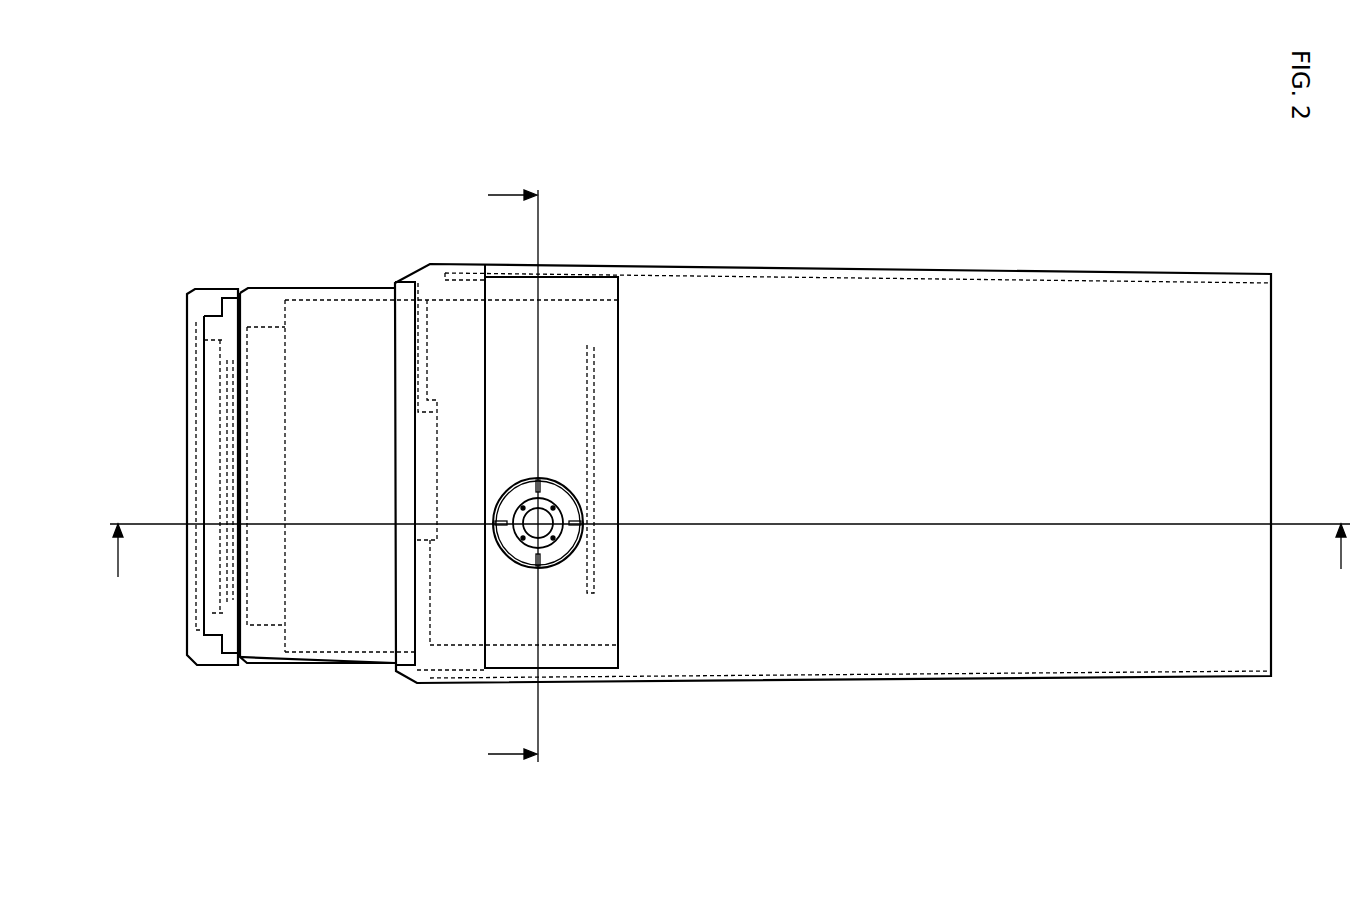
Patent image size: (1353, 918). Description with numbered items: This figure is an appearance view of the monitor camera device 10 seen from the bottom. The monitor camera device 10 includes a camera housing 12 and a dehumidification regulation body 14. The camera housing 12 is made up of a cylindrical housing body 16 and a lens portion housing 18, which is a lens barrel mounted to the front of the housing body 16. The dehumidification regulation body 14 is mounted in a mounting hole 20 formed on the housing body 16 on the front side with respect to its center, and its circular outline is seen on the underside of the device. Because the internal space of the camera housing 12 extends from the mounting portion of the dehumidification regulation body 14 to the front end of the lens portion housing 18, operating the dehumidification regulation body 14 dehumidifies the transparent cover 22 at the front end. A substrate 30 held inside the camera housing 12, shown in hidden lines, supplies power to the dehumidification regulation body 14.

The monitor camera device 10 is at (913, 152).
The camera housing 12 is at (665, 253).
The dehumidification regulation body 14 is at (518, 552).
The housing body 16 is at (832, 292).
The lens portion housing 18 is at (340, 312).
The mounting hole 20 is at (560, 567).
The transparent cover 22 is at (187, 473).
The substrate 30 is at (592, 373).